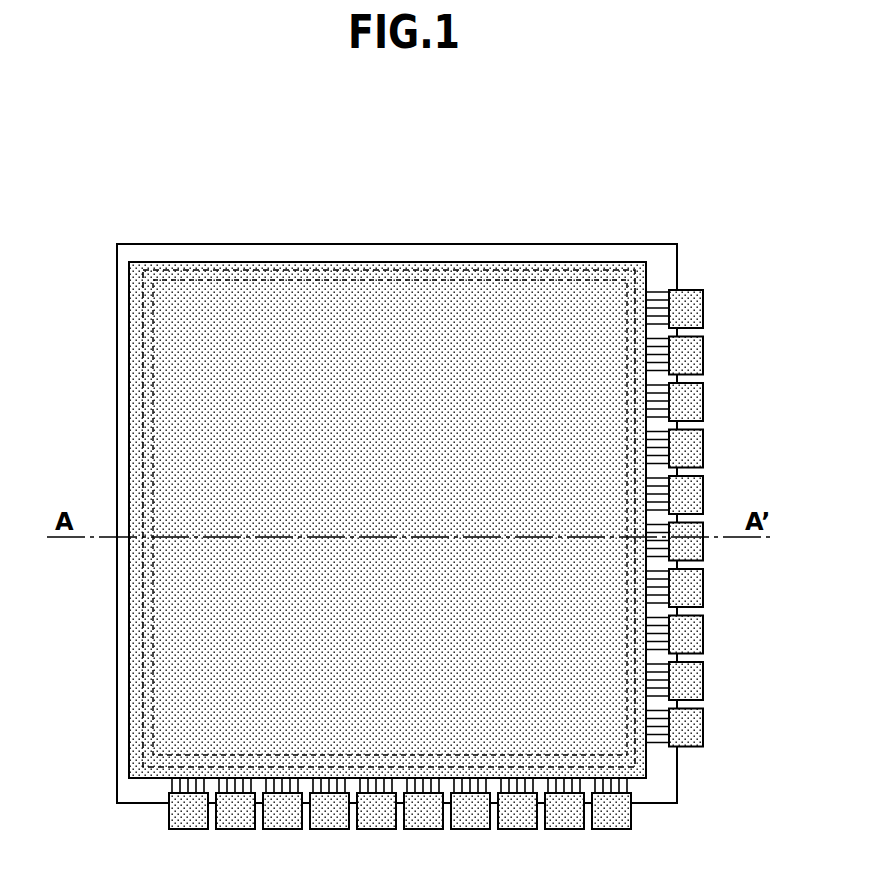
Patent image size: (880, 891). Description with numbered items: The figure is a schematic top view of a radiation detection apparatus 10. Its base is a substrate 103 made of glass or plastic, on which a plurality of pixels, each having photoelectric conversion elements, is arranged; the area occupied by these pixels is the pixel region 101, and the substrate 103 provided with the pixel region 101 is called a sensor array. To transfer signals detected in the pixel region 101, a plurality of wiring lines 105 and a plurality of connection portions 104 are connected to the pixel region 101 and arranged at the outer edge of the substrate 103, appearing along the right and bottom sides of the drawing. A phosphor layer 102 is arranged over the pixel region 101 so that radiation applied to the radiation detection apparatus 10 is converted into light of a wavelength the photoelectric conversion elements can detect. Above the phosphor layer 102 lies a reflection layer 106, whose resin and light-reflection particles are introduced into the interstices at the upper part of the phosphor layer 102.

The radiation detection apparatus 10 is at (427, 130).
The pixel region 101 is at (228, 293).
The phosphor layer 102 is at (345, 282).
The substrate 103 is at (449, 256).
The connection portions 104 is at (688, 296).
The wiring lines 105 is at (659, 290).
The reflection layer 106 is at (533, 266).